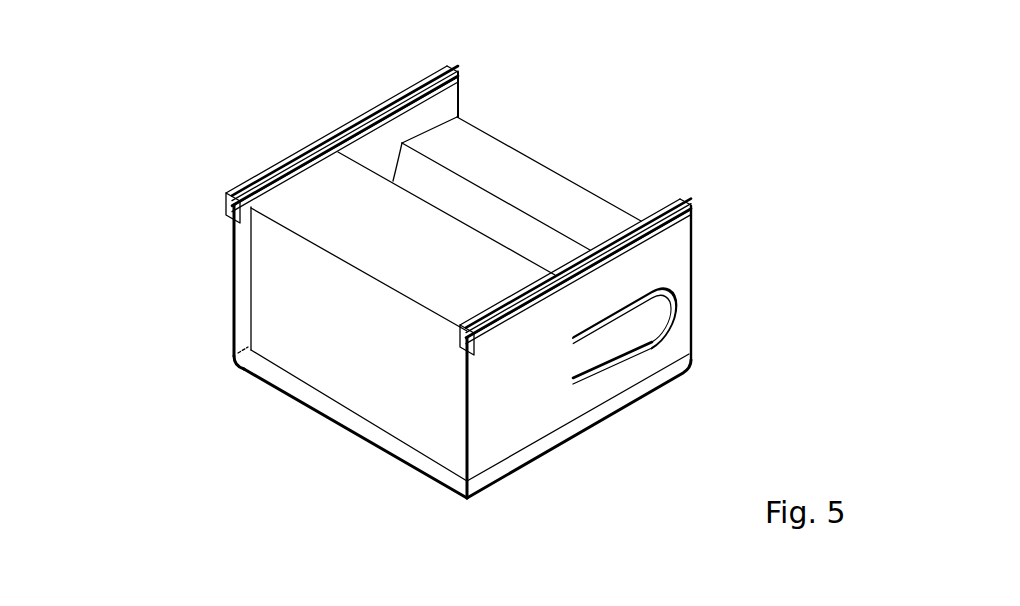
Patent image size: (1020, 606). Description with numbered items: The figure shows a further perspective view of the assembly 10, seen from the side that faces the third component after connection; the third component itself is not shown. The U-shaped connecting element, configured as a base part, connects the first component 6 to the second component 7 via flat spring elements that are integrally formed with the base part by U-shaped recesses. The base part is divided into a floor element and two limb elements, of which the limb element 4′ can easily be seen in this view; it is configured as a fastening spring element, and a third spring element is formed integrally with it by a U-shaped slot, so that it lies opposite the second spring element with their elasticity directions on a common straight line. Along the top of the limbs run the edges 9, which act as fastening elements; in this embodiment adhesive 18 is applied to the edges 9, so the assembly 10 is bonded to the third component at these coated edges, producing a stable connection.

The second limb element 4′ is at (507, 423).
The first component 6 is at (380, 372).
The second component 7 is at (532, 188).
The edges 9 is at (404, 96).
The assembly 10 is at (727, 121).
The adhesive 18 is at (450, 77).